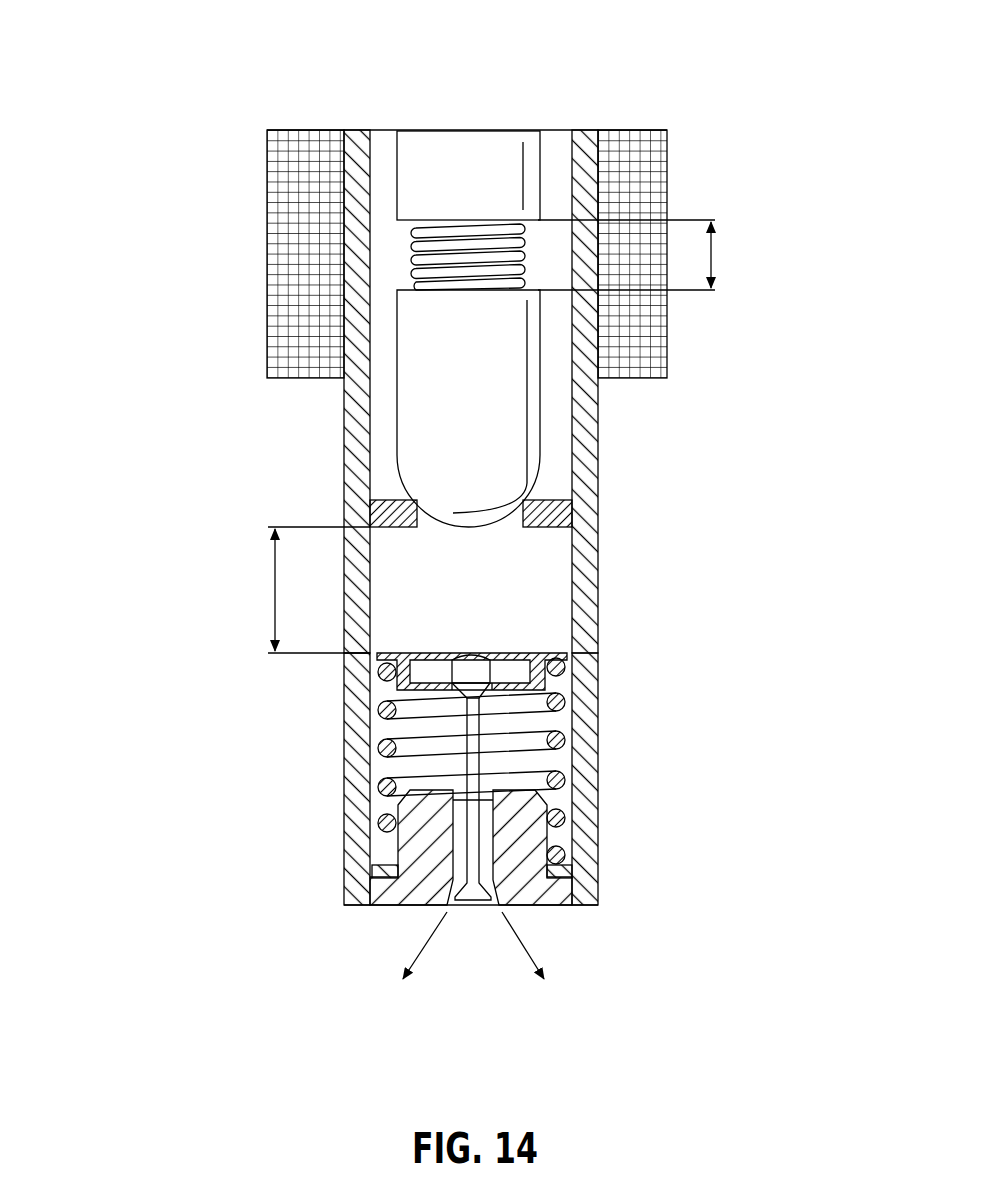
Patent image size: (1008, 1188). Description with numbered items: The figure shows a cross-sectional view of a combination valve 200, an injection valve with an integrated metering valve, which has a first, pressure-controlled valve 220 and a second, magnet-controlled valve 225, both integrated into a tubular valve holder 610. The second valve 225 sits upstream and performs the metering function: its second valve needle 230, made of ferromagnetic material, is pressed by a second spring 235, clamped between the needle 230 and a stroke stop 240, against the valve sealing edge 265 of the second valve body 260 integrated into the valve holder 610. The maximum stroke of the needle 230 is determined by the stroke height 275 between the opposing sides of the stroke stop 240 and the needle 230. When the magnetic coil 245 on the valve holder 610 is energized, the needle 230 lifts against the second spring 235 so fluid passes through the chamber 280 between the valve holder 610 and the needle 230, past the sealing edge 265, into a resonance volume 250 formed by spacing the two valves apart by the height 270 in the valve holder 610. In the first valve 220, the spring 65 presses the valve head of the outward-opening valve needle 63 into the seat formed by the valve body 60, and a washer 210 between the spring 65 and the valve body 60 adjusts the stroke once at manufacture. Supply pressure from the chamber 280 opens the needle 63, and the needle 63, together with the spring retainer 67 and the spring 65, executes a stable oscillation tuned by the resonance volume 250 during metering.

The combination valve 200 is at (189, 301).
The second magnet-controlled valve 225 is at (719, 167).
The magnetic coil 245 is at (650, 333).
The valve holder 610 is at (580, 437).
The first pressure-controlled valve 220 is at (671, 768).
The stroke stop 240 is at (450, 157).
The chamber 280 is at (549, 158).
The second spring 235 is at (413, 242).
The stroke height 275 is at (711, 257).
The second valve needle 230 is at (420, 432).
The second valve body 260 is at (387, 513).
The valve sealing edge 265 is at (523, 507).
The height 270 is at (275, 588).
The resonance volume 250 is at (538, 593).
The spring retainer 67 is at (565, 658).
The valve needle 63 is at (475, 907).
The spring 65 is at (380, 752).
The valve body 60 is at (528, 875).
The washer 210 is at (377, 875).